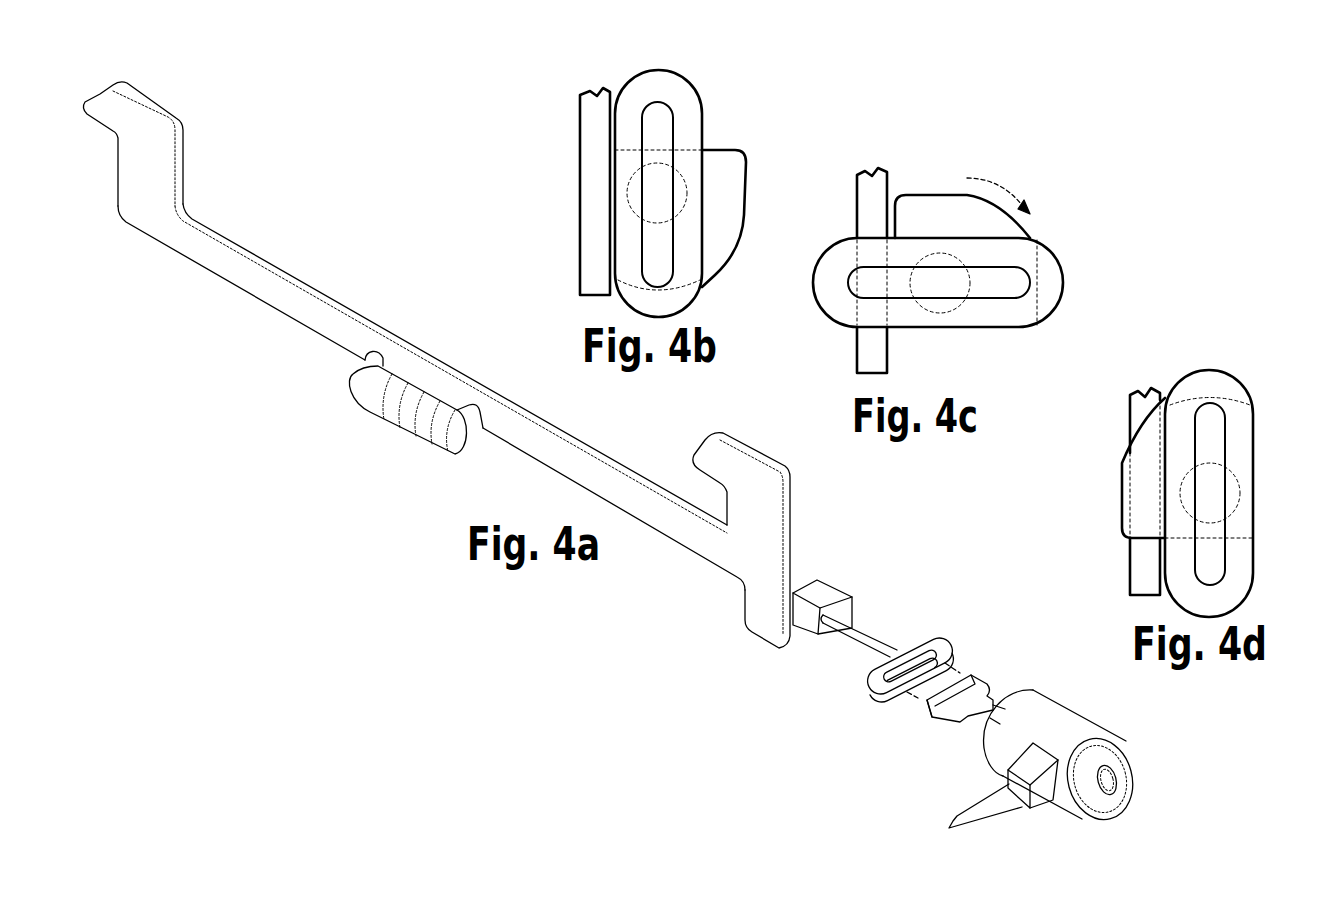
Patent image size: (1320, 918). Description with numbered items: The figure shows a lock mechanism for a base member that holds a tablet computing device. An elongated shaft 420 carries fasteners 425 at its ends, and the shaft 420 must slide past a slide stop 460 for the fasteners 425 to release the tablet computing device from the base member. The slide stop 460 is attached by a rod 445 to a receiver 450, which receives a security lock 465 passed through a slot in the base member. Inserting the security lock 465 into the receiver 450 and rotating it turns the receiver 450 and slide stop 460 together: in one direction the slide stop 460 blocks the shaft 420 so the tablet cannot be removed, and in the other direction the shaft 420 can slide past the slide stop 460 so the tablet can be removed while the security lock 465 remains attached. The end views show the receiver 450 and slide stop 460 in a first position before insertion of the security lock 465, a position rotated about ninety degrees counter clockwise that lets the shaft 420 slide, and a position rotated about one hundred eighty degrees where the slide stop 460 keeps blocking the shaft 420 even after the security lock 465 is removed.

In FIG. 4a, the shaft 420 is at (291, 302).
In FIG. 4b, the shaft 420 is at (590, 137).
In FIG. 4c, the shaft 420 is at (857, 213).
In FIG. 4d, the shaft 420 is at (1130, 427).
In FIG. 4a, the fasteners 425 is at (100, 94).
In FIG. 4a, the rod 445 is at (871, 636).
In FIG. 4a, the receiver 450 is at (886, 699).
In FIG. 4b, the receiver 450 is at (653, 70).
In FIG. 4c, the receiver 450 is at (1060, 257).
In FIG. 4d, the receiver 450 is at (1201, 371).
In FIG. 4a, the slide stop 460 is at (810, 637).
In FIG. 4b, the slide stop 460 is at (743, 150).
In FIG. 4c, the slide stop 460 is at (944, 195).
In FIG. 4d, the slide stop 460 is at (1122, 496).
In FIG. 4a, the security lock 465 is at (983, 686).